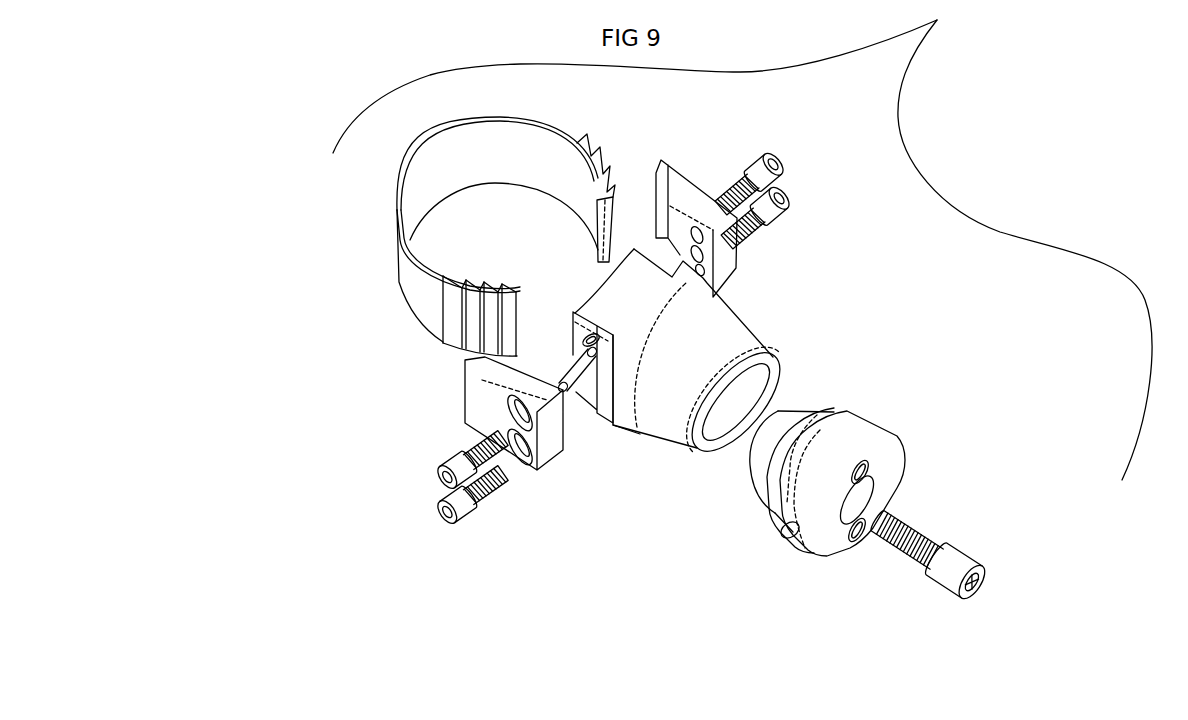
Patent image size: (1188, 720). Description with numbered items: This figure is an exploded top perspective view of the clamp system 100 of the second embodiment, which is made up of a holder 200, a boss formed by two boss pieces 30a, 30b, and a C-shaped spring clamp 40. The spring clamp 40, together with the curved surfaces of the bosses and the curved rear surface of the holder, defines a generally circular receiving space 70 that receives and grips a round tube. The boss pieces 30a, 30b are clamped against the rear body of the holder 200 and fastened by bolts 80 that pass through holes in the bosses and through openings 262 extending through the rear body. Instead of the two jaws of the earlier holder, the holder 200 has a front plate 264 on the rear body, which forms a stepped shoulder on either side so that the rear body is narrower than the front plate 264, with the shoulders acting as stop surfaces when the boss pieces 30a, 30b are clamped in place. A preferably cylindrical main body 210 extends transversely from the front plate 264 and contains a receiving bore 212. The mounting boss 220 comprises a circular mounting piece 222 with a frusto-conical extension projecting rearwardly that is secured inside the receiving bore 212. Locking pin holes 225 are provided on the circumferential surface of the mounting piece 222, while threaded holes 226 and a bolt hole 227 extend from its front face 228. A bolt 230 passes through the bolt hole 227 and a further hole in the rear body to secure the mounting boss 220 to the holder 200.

The boss piece 30a is at (727, 258).
The boss piece 30b is at (548, 430).
The spring clamp 40 is at (407, 260).
The receiving space 70 is at (532, 254).
The bolt 80 is at (773, 163).
The clamp system 100 is at (1031, 187).
The holder 200 is at (800, 483).
The main body 210 is at (696, 407).
The receiving bore 212 is at (723, 432).
The mounting boss 220 is at (761, 548).
The mounting piece 222 is at (802, 543).
The locking pin hole 225 is at (792, 527).
The threaded hole 226 is at (853, 523).
The bolt hole 227 is at (856, 500).
The front face 228 is at (828, 537).
The bolt 230 is at (970, 565).
The opening 262 is at (594, 336).
The front plate 264 is at (627, 387).